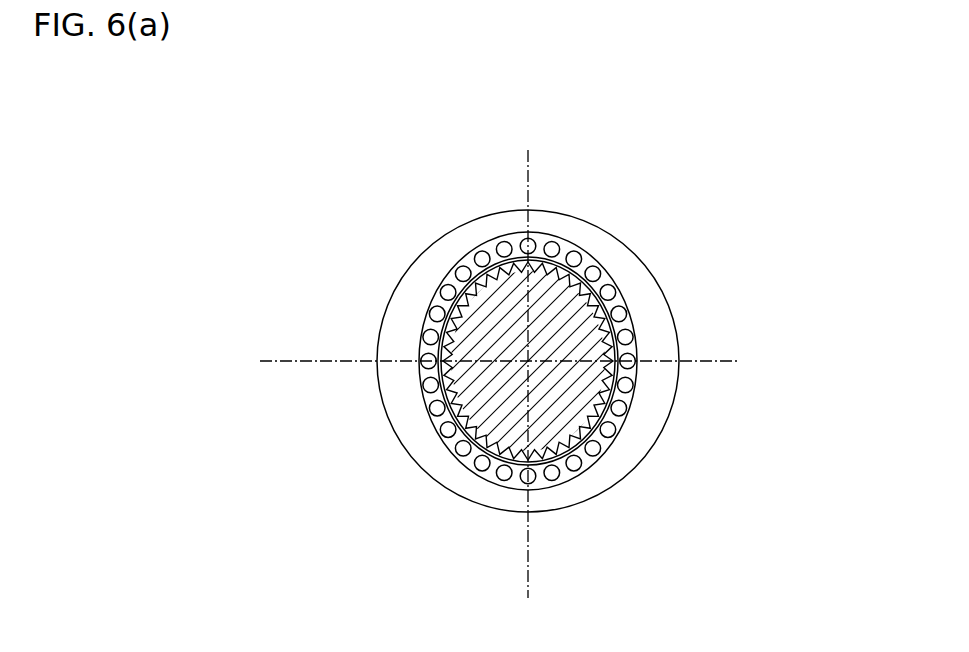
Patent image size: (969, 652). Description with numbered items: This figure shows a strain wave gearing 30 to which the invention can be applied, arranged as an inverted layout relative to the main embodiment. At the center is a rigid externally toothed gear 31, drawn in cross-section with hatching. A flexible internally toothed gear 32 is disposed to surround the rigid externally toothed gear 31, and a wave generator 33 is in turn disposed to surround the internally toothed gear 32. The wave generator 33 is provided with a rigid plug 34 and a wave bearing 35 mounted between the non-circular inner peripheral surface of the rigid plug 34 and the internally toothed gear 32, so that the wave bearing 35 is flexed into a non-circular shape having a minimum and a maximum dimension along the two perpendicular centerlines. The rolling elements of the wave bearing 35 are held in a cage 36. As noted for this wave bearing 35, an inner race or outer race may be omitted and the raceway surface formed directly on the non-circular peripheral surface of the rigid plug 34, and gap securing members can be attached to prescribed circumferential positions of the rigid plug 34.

The ball bearing assembly 30 is at (712, 168).
The rigid externally toothed gear 31 is at (555, 333).
The flexible internally toothed gear 32 is at (563, 247).
The wave generator 33 is at (470, 232).
The rigid plug 34 is at (658, 407).
The wave bearing 35 is at (597, 455).
The cage (retainer) 36 is at (488, 472).